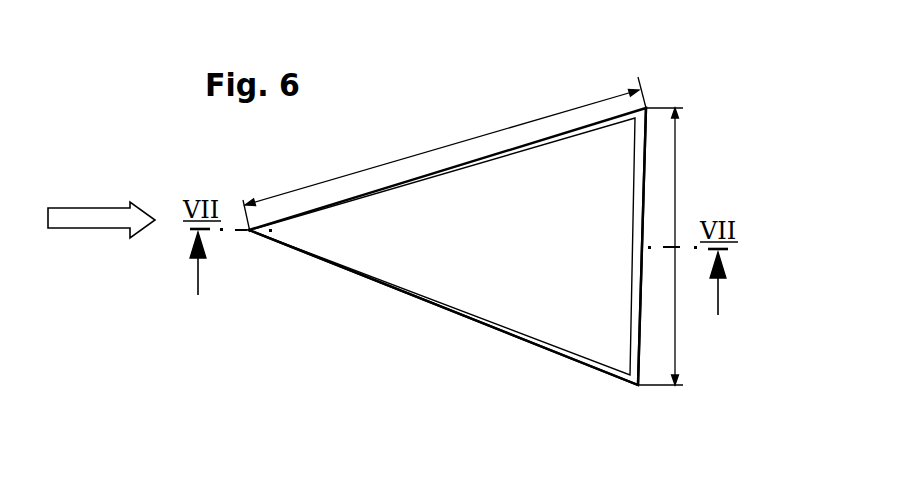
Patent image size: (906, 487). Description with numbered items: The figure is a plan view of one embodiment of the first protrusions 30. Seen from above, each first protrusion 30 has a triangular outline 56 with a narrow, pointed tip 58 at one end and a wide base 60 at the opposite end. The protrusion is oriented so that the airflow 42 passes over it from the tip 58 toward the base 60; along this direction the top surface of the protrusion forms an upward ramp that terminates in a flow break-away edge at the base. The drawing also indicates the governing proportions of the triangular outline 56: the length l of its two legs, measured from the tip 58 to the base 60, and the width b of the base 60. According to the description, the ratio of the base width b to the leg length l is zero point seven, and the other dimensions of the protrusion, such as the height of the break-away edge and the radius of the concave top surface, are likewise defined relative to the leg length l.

The first protrusion 30 is at (463, 120).
The airflow 42 is at (90, 218).
The triangular outline 56 is at (409, 308).
The tip 58 is at (247, 240).
The base 60 is at (650, 298).
The length of the legs of the outline l is at (385, 164).
The width of the base b is at (675, 165).